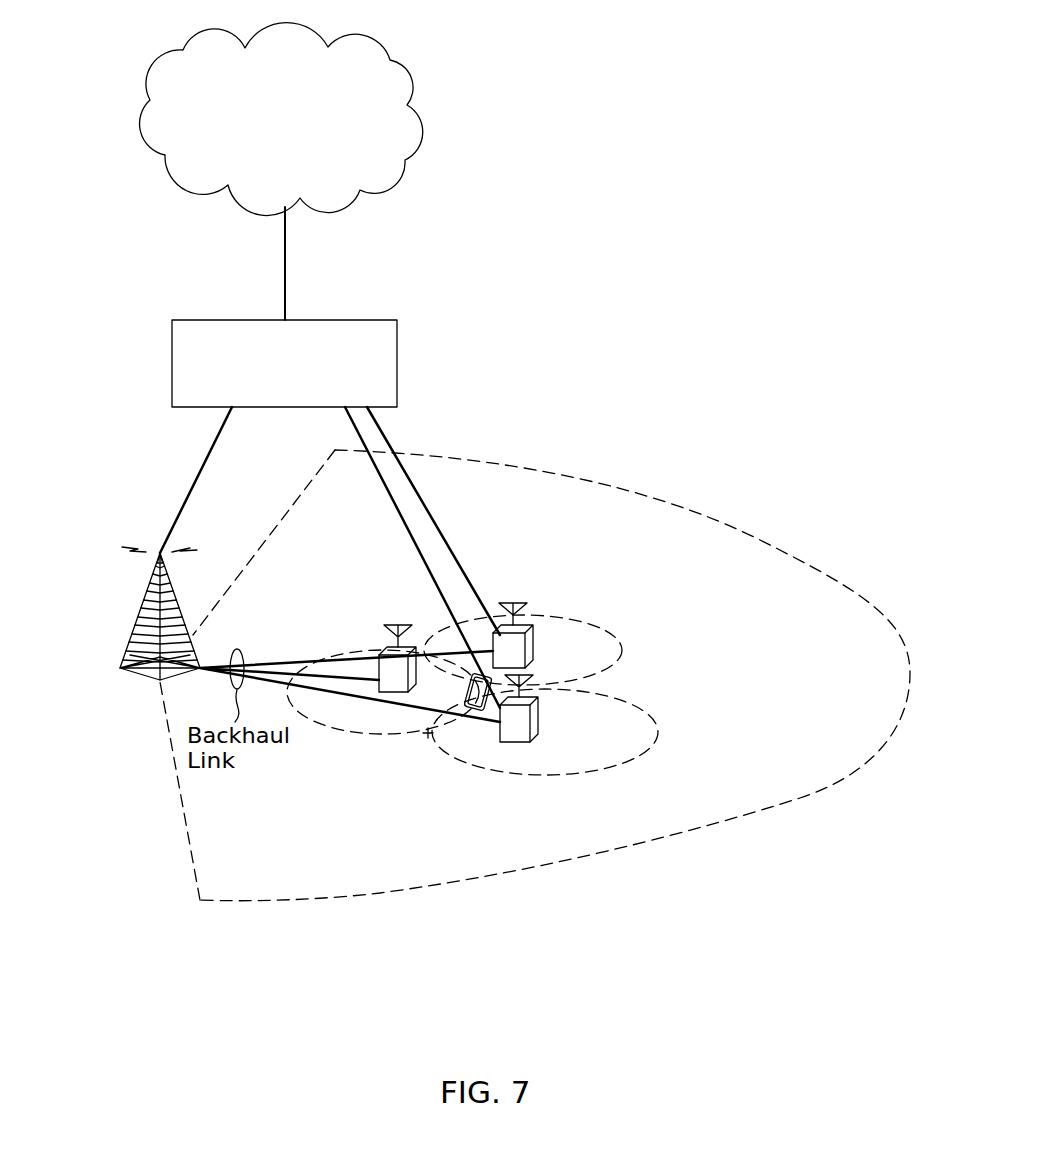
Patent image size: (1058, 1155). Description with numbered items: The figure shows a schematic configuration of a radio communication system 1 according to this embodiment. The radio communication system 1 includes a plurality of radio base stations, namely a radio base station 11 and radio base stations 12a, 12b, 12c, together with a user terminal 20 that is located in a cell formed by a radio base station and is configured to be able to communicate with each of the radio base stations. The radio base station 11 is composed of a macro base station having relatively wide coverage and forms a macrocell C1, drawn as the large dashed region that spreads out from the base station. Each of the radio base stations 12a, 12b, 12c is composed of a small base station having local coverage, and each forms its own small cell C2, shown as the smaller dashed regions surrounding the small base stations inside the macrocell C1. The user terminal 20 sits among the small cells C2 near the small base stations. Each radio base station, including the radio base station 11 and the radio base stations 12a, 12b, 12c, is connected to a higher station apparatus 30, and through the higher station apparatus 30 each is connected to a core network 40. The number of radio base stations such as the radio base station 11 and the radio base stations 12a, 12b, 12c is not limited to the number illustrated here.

The radio communication system 1 is at (643, 328).
The radio base station 11 is at (138, 612).
The radio base station 12a is at (533, 648).
The radio base station 12b is at (512, 745).
The radio base station 12c is at (379, 656).
The user terminal 20 is at (470, 704).
The higher station apparatus 30 is at (358, 320).
The core network 40 is at (357, 33).
The macrocell C1 is at (712, 513).
The small cell C2 is at (326, 735).